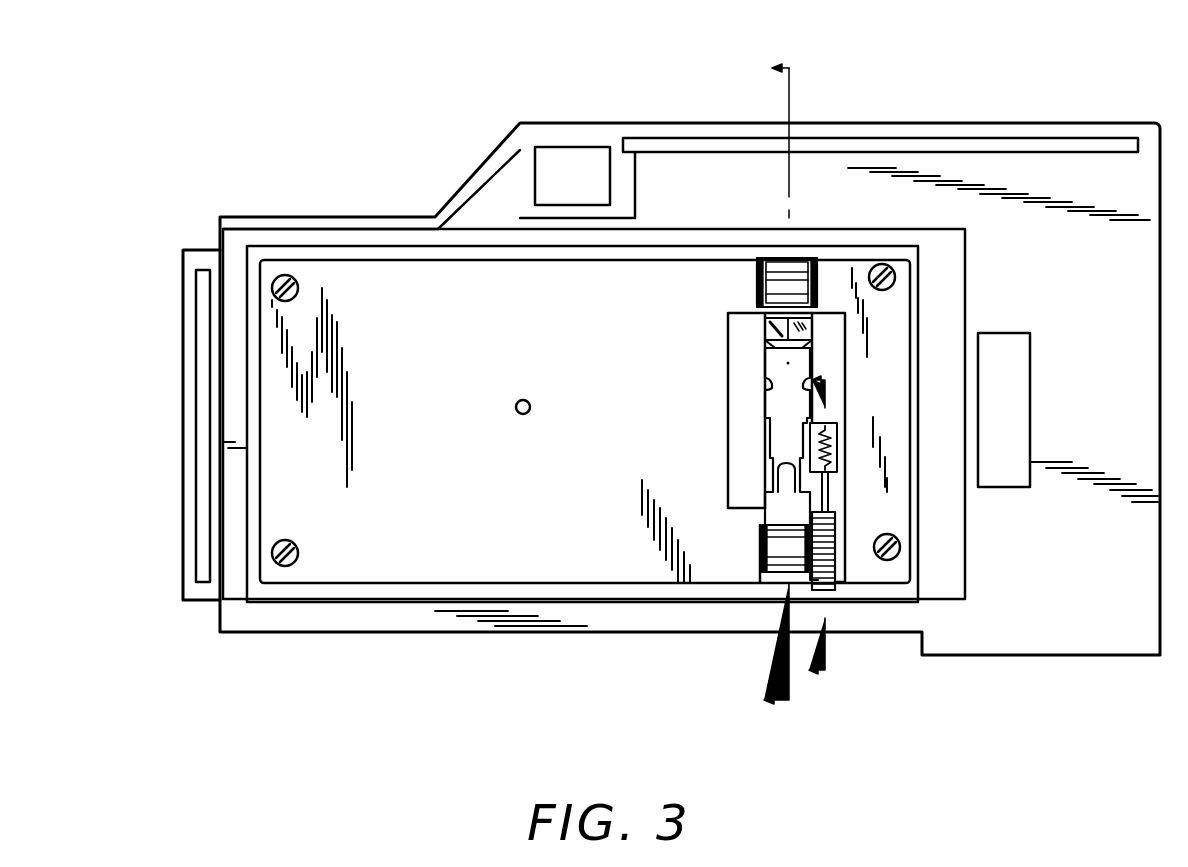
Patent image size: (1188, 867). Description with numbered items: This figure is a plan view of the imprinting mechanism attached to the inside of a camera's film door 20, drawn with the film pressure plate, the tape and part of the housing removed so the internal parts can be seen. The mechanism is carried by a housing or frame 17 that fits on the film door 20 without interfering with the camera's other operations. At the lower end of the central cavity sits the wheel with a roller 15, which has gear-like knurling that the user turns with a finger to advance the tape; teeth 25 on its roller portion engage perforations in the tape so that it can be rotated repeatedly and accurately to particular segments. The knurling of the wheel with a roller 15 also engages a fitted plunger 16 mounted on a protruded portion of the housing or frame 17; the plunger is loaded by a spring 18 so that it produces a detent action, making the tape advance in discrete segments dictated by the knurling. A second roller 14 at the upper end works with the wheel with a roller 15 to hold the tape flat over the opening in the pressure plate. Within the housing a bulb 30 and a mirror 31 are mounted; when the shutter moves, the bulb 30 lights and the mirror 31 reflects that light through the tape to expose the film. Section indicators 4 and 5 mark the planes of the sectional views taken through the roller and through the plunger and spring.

The roller 14 is at (798, 258).
The wheel with a roller 15 is at (772, 572).
The fitted plunger 16 is at (832, 508).
The housing or frame 17 is at (342, 577).
The spring 18 is at (825, 423).
The film door 20 is at (1105, 650).
The teeth 25 is at (807, 577).
The bulb 30 is at (763, 520).
The mirror 31 is at (778, 331).
The section line 4- 4 is at (760, 387).
The section line 5- 5 is at (821, 527).